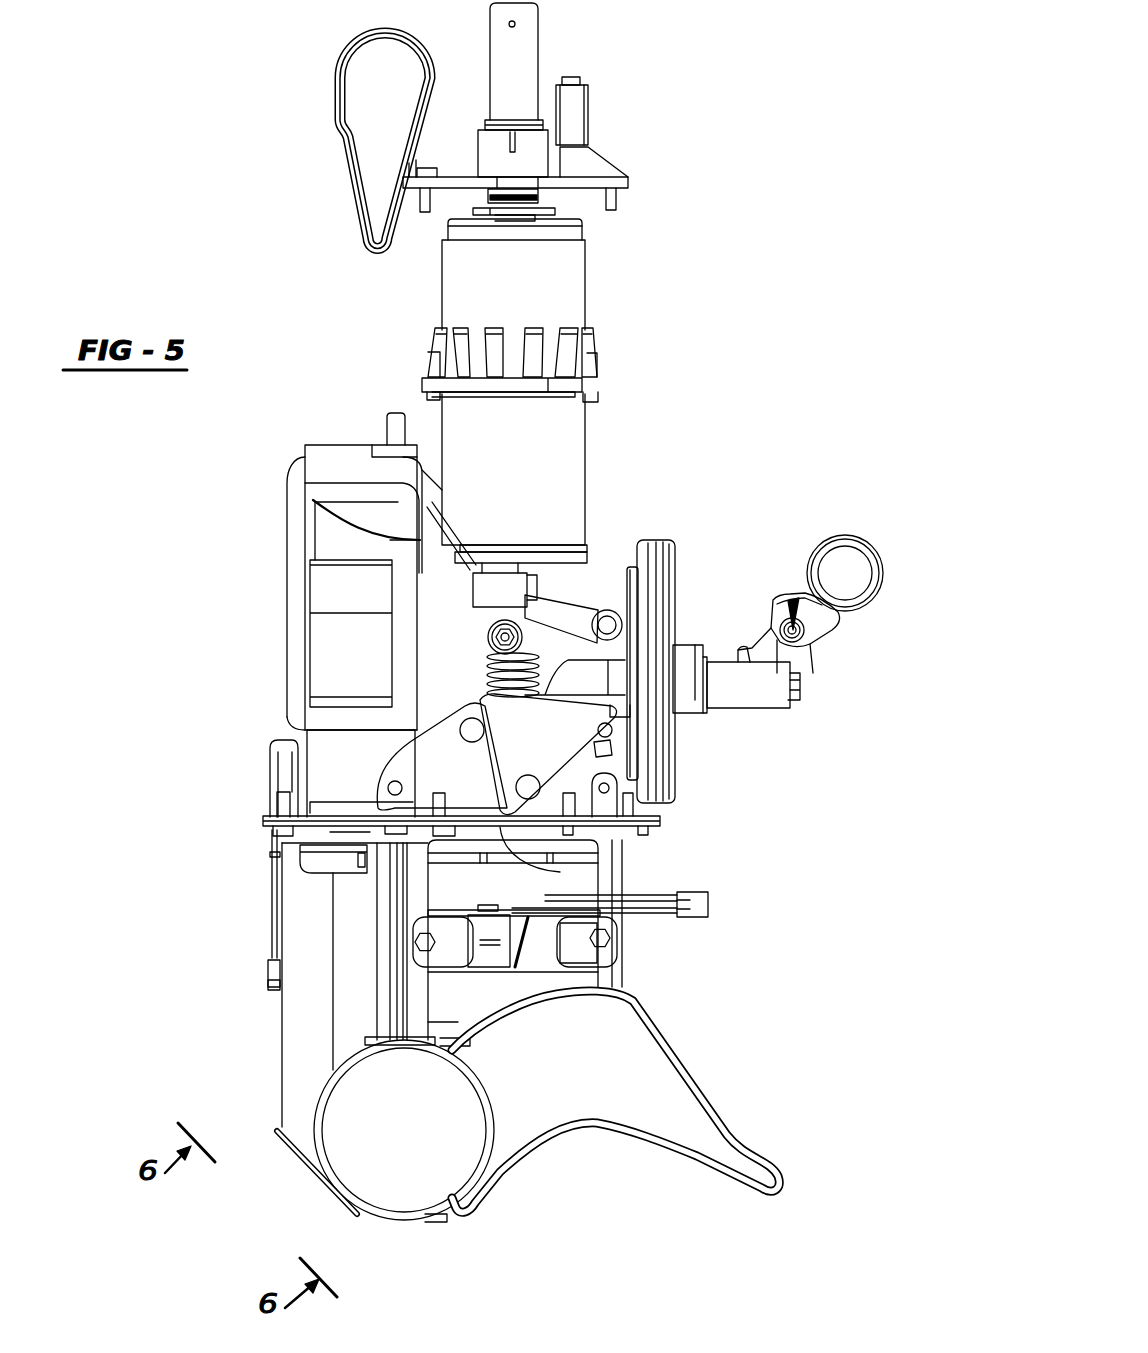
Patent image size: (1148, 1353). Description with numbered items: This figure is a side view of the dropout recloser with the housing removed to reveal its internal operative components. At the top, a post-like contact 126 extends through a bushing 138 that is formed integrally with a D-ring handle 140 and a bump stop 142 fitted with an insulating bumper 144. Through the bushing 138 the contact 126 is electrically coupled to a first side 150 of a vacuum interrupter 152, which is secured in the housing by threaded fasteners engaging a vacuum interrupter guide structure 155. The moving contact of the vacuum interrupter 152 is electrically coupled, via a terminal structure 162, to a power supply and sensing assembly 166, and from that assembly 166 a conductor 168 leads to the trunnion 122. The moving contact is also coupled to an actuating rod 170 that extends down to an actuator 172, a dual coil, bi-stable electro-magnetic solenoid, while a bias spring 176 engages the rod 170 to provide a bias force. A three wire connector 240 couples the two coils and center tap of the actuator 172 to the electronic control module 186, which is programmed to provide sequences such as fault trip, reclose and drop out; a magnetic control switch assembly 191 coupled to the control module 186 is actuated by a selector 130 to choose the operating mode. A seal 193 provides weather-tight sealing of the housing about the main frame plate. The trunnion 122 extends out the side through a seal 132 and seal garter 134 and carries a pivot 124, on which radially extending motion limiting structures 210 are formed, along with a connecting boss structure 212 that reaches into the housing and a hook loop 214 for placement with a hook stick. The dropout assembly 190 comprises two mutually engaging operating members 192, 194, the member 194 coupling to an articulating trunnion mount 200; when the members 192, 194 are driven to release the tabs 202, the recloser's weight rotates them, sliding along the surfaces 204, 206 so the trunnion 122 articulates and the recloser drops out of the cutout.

The trunnion 122 is at (770, 680).
The pivot 124 is at (810, 630).
The contact 126 is at (523, 52).
The selector 130 is at (637, 1058).
The seal 132 is at (663, 565).
The seal garter 134 is at (630, 560).
The bushing 138 is at (499, 152).
The D-ring handle 140 is at (333, 88).
The bump stop 142 is at (582, 172).
The insulating bumper 144 is at (590, 100).
The first side of vacuum interrupter 150 is at (525, 211).
The vacuum interrupter 152 is at (557, 268).
The vacuum interrupter guide structure 155 is at (600, 386).
The terminal structure 162 is at (497, 632).
The power supply and sensing assembly 166 is at (293, 490).
The conductor 168 is at (565, 612).
The actuating rod 170 is at (522, 577).
The actuator 172 is at (630, 969).
The bias spring 176 is at (520, 680).
The electronic control module 186 is at (310, 919).
The dropout assembly 190 is at (356, 762).
The magnetic control switch assembly 191 is at (437, 1131).
The operating member 192 is at (413, 751).
The seal 193 is at (648, 820).
The operating member 194 is at (597, 747).
The articulating trunnion mount 200 is at (588, 678).
The tabs 202 is at (598, 873).
The surface 204 is at (492, 766).
The surface 206 is at (512, 763).
The motion limiting structures 210 is at (838, 610).
The connecting boss structure 212 is at (722, 675).
The hook loop 214 is at (840, 545).
The three wire connector 240 is at (722, 905).